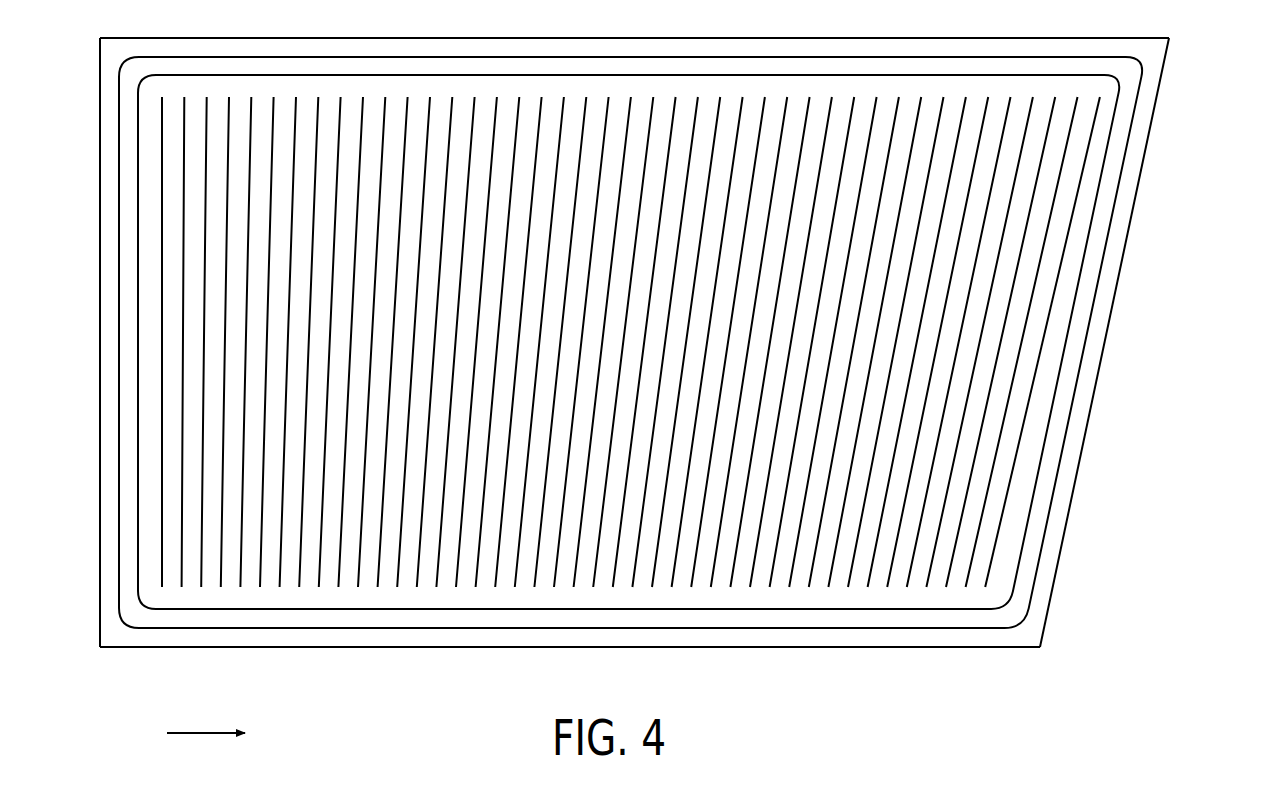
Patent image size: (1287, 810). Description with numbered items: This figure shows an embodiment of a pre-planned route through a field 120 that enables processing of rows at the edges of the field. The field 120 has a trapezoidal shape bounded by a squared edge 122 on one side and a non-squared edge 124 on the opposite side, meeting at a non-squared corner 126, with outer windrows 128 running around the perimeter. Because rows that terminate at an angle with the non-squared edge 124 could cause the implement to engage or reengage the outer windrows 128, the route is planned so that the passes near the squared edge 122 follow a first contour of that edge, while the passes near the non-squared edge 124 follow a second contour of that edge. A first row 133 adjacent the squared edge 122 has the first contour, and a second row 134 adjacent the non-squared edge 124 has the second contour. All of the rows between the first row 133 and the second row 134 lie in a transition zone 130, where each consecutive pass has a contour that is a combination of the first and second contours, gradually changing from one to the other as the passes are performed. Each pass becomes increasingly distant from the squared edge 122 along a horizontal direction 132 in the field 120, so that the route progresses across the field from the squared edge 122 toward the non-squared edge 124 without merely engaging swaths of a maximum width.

The field 120 is at (516, 696).
The squared edge 122 is at (99, 613).
The non-squared edge 124 is at (1053, 592).
The non-squared corner 126 is at (1118, 97).
The outer windrows 128 is at (866, 628).
The transition zone 130 is at (563, 589).
The horizontal direction 132 is at (203, 733).
The first row 133 is at (163, 587).
The second row 134 is at (985, 587).